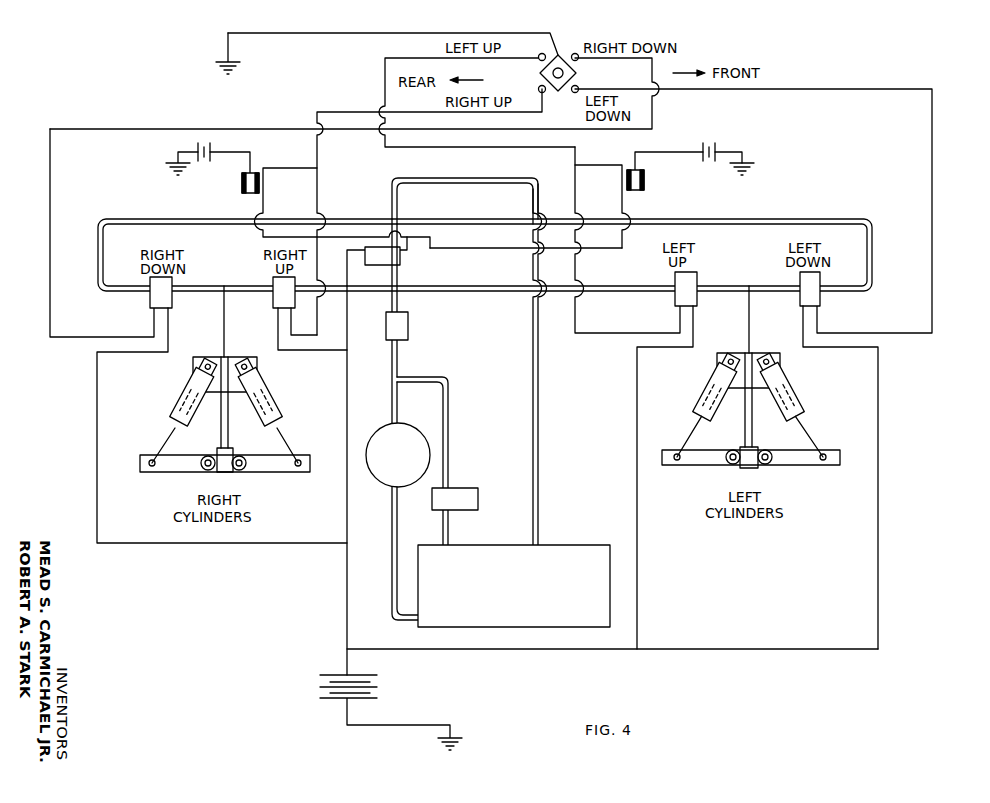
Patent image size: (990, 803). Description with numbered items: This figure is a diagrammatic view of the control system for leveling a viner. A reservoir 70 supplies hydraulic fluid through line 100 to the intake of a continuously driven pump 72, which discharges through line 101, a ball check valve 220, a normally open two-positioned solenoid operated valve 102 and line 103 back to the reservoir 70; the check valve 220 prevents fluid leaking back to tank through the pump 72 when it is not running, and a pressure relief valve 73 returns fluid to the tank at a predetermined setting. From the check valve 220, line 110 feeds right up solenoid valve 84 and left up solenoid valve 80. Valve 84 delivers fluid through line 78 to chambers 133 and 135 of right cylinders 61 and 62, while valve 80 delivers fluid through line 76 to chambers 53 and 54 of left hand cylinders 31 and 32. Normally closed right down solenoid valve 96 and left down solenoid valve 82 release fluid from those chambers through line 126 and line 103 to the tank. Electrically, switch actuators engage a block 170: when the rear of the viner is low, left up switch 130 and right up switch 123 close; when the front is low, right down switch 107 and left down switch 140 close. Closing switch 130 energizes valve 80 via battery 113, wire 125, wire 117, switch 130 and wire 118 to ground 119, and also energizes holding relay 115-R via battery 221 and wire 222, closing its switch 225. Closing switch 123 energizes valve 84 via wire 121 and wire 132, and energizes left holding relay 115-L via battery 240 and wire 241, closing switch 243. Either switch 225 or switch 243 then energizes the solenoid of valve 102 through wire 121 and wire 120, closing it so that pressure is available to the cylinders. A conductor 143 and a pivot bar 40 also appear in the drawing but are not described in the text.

The wire 118 is at (384, 33).
The ground 119 is at (228, 58).
The actuating block 170 is at (565, 52).
The left up switch 130 is at (540, 60).
The right up switch 123 is at (539, 89).
The right down switch 107 is at (578, 60).
The left down switch 140 is at (578, 89).
The battery 240 is at (212, 129).
The conductor to right down valve 143 is at (50, 232).
The wire 241 is at (250, 152).
The left holding relay 115-L is at (243, 190).
The switch 243 is at (265, 182).
The wire 132 is at (318, 186).
The wire 222 is at (636, 152).
The battery 221 is at (716, 152).
The switch 225 is at (622, 190).
The holding relay 115-R is at (647, 188).
The wire 117 is at (604, 335).
The line 126 is at (442, 219).
The line 110 is at (440, 286).
The line 103 is at (440, 178).
The wire 120 is at (440, 248).
The normally open two-positioned solenoid operated valve 102 is at (402, 262).
The right down solenoid valve 96 is at (150, 284).
The right up solenoid valve 84 is at (273, 284).
The left up solenoid valve 80 is at (697, 274).
The left down solenoid valve 82 is at (820, 274).
The line 78 is at (225, 332).
The line 76 is at (750, 330).
The chamber 133 is at (190, 386).
The chamber 135 is at (262, 386).
The right cylinder 61 is at (170, 402).
The right cylinder 62 is at (282, 402).
The chamber 53 is at (714, 374).
The chamber 54 is at (792, 374).
The left hand cylinder 31 is at (686, 407).
The left hand cylinder 32 is at (809, 407).
The pivot bar 40 is at (812, 463).
The line 101 is at (392, 372).
The ball check valve 220 is at (408, 330).
The pump 72 is at (416, 430).
The pressure relief valve 73 is at (478, 494).
The line 100 is at (393, 545).
The reservoir 70 is at (592, 530).
The wire 121 is at (347, 584).
The wire 125 is at (590, 649).
The battery 113 is at (365, 675).